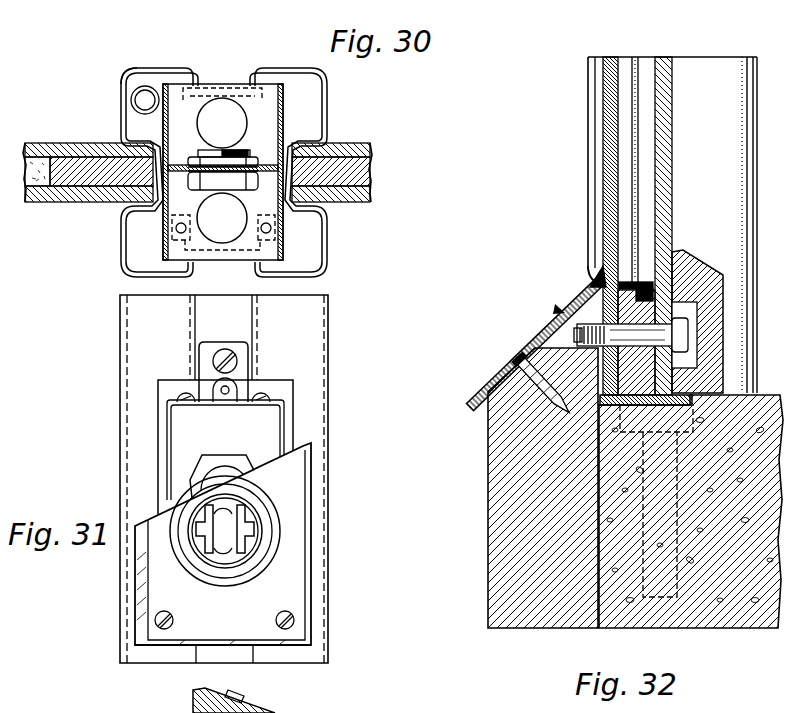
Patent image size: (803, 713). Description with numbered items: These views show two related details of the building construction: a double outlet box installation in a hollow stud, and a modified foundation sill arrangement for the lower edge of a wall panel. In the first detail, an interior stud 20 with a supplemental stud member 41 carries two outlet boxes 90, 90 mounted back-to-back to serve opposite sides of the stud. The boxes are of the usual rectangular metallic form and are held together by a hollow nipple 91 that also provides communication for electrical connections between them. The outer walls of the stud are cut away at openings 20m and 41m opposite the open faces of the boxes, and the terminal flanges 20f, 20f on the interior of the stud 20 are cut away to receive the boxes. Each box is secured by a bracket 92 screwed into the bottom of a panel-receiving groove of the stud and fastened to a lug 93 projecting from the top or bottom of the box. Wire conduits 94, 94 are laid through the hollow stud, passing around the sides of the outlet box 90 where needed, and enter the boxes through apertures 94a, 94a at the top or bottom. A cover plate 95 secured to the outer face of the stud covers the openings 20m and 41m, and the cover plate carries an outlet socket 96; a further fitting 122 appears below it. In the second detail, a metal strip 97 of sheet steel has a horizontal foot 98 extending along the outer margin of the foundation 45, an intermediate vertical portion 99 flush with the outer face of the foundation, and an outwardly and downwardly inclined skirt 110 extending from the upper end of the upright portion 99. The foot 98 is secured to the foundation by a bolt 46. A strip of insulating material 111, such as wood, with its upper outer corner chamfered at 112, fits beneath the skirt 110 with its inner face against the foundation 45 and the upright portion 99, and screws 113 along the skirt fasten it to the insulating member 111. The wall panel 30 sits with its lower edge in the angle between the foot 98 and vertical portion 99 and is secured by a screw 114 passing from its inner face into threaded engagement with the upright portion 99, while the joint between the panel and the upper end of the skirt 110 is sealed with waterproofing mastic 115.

In FIG. 30, the interior stud 20 is at (121, 248).
In FIG. 31, the interior stud 20 is at (132, 345).
In FIG. 30, the cut-away opening in stud outer wall 20m is at (178, 277).
In FIG. 31, the cut-away opening in stud outer wall 20m is at (160, 392).
In FIG. 30, the terminal flanges 20f is at (388, 140).
In FIG. 30, the supplemental stud member 41 is at (130, 93).
In FIG. 30, the cut-away opening in supplemental stud wall 41m is at (178, 67).
In FIG. 30, the wire conduit 94 is at (137, 88).
In FIG. 30, the aperture 94a is at (206, 107).
In FIG. 30, the outlet box 90 is at (285, 122).
In FIG. 30, the hollow nipple 91 is at (256, 160).
In FIG. 31, the hollow nipple 91 is at (248, 457).
In FIG. 31, the bracket 92 is at (243, 357).
In FIG. 31, the lug 93 is at (235, 388).
In FIG. 31, the cover plate 95 is at (307, 487).
In FIG. 31, the outlet socket 96 is at (277, 513).
In FIG. 31, the bracket 122 is at (250, 697).
In FIG. 32, the wall panel 30 is at (672, 150).
In FIG. 32, the screw 114 is at (698, 263).
In FIG. 32, the waterproofing material 115 is at (601, 279).
In FIG. 32, the intermediate vertical portion 99 is at (597, 276).
In FIG. 32, the metal strip 97 is at (593, 300).
In FIG. 32, the inclined skirt portion 110 is at (556, 308).
In FIG. 32, the screw 113 is at (533, 342).
In FIG. 32, the chamfer 112 is at (502, 383).
In FIG. 32, the horizontal flange or foot 98 is at (687, 393).
In FIG. 32, the insulating strip 111 is at (513, 523).
In FIG. 32, the bolt 46 is at (587, 630).
In FIG. 32, the foundation sill 45 is at (760, 623).